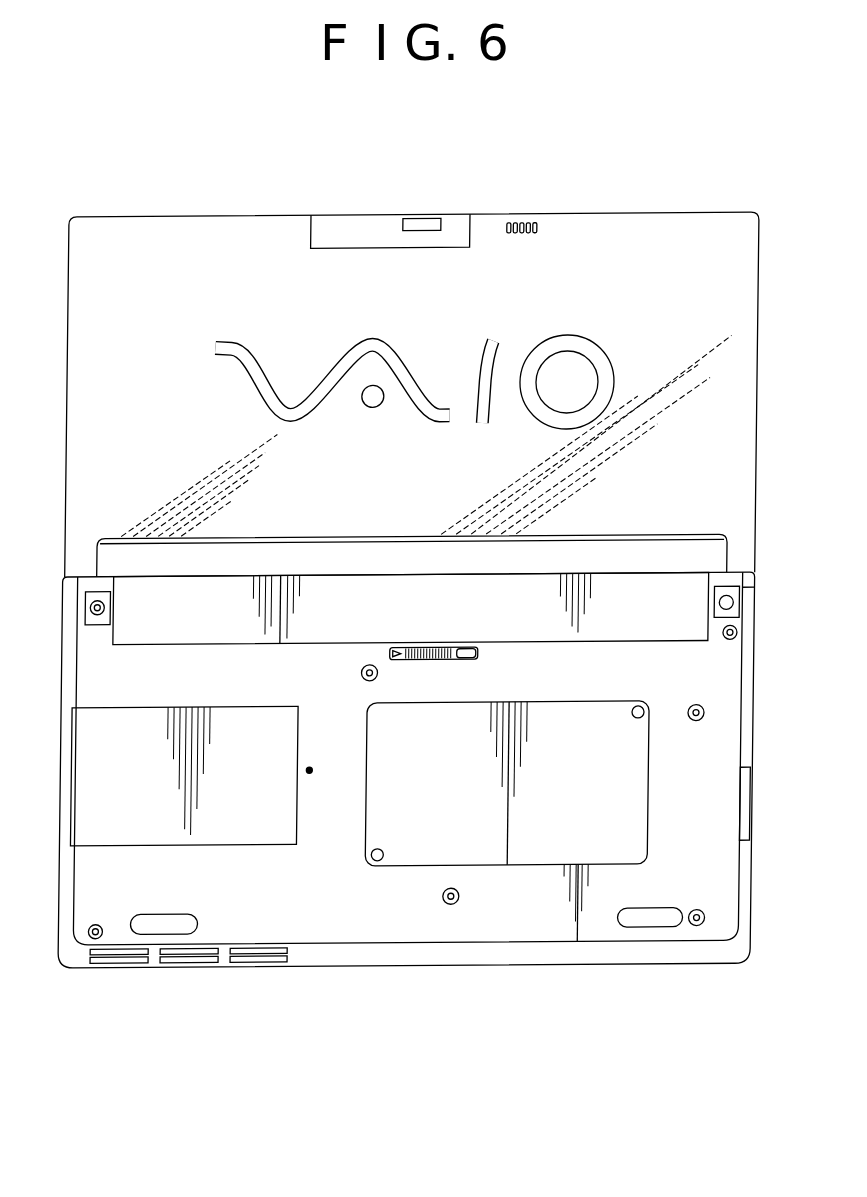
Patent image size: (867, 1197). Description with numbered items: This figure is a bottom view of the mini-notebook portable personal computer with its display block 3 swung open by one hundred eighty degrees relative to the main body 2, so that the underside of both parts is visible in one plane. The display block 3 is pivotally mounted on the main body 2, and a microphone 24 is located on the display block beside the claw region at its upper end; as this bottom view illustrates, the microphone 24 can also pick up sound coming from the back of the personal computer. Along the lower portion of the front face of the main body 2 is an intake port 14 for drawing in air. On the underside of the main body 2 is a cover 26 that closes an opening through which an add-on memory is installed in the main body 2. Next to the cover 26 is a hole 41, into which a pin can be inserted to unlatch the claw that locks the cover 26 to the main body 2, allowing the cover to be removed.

The main body 2 is at (562, 970).
The display block 3 is at (673, 210).
The intake port 14 is at (197, 966).
The microphone 24 is at (517, 224).
The cover 26 is at (232, 848).
The hole 41 is at (316, 776).